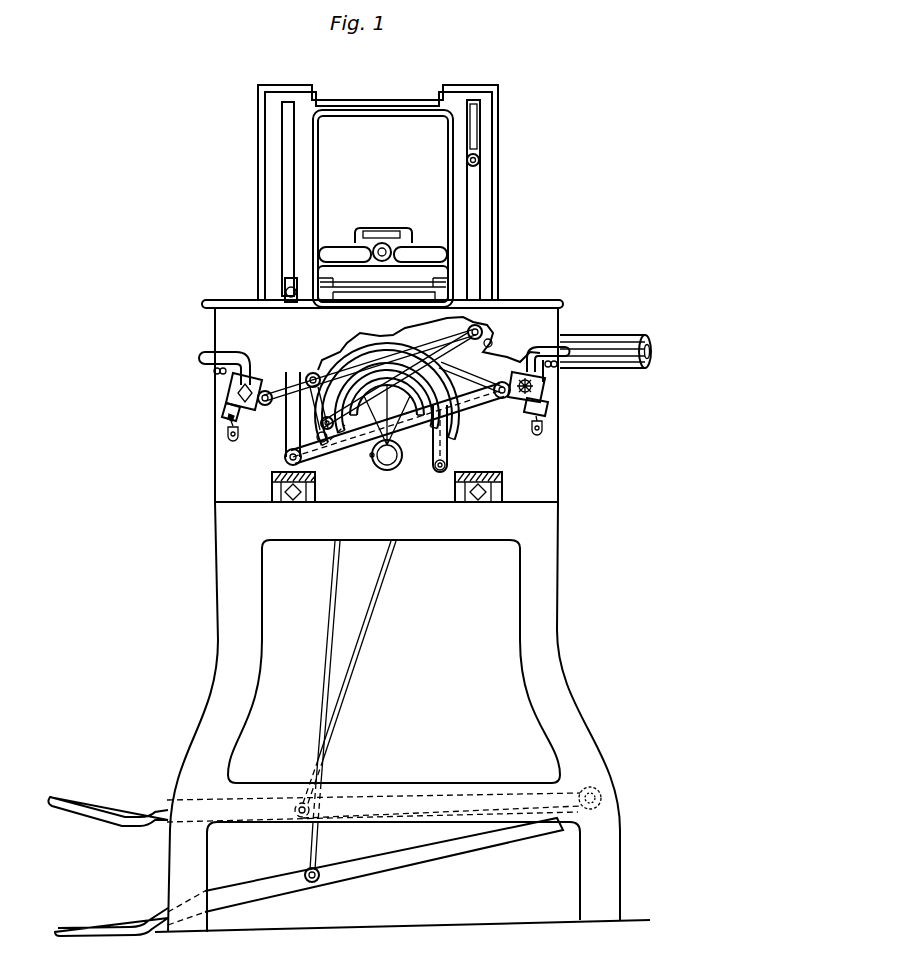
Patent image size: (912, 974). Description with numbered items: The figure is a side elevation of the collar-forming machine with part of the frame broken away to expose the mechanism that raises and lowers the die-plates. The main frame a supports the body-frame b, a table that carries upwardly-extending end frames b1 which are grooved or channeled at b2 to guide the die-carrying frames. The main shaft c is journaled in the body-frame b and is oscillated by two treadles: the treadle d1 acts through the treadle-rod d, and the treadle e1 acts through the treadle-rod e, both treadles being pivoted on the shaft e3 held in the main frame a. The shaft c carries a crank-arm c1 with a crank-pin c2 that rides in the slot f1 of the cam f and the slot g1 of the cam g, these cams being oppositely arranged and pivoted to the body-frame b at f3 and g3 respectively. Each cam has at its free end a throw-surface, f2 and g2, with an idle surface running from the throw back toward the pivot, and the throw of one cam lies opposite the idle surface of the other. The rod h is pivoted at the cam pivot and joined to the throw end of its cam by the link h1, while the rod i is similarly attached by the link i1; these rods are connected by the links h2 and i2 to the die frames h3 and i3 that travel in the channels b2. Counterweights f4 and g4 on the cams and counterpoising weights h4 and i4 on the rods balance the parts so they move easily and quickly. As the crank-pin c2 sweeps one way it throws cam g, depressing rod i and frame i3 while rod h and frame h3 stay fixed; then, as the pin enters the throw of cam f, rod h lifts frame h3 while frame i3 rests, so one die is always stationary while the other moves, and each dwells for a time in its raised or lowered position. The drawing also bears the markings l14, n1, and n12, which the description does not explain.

The main frame a is at (218, 656).
The body-frame b is at (543, 461).
The end frame b1 is at (262, 188).
The channel b2 is at (289, 181).
The main shaft c is at (388, 462).
The crank-arm c1 is at (364, 457).
The crank-pin c2 is at (333, 445).
The treadle-rod d is at (330, 681).
The treadle d1 is at (351, 866).
The treadle-rod e is at (350, 673).
The treadle e1 is at (108, 803).
The treadle shaft e3 is at (604, 799).
The cam f is at (402, 440).
The cam slot f1 is at (438, 472).
The throw-surface f2 is at (462, 382).
The cam pivot f3 is at (267, 390).
The counterweight f4 is at (238, 396).
The cam g is at (385, 350).
The cam slot g1 is at (428, 370).
The throw-surface g2 is at (318, 374).
The cam pivot g3 is at (505, 382).
The counterweight g4 is at (548, 410).
The rod h is at (480, 405).
The link h1 is at (447, 438).
The link h2 is at (286, 453).
The die frame h3 is at (288, 257).
The counterpoising-weight h4 is at (546, 388).
The rod i is at (416, 345).
The link i1 is at (318, 411).
The link i2 is at (478, 328).
The die frame i3 is at (474, 135).
The counterpoising-weight i4 is at (228, 427).
The shaft l14 is at (606, 342).
The roller n1 is at (392, 245).
The roller pin n12 is at (383, 247).